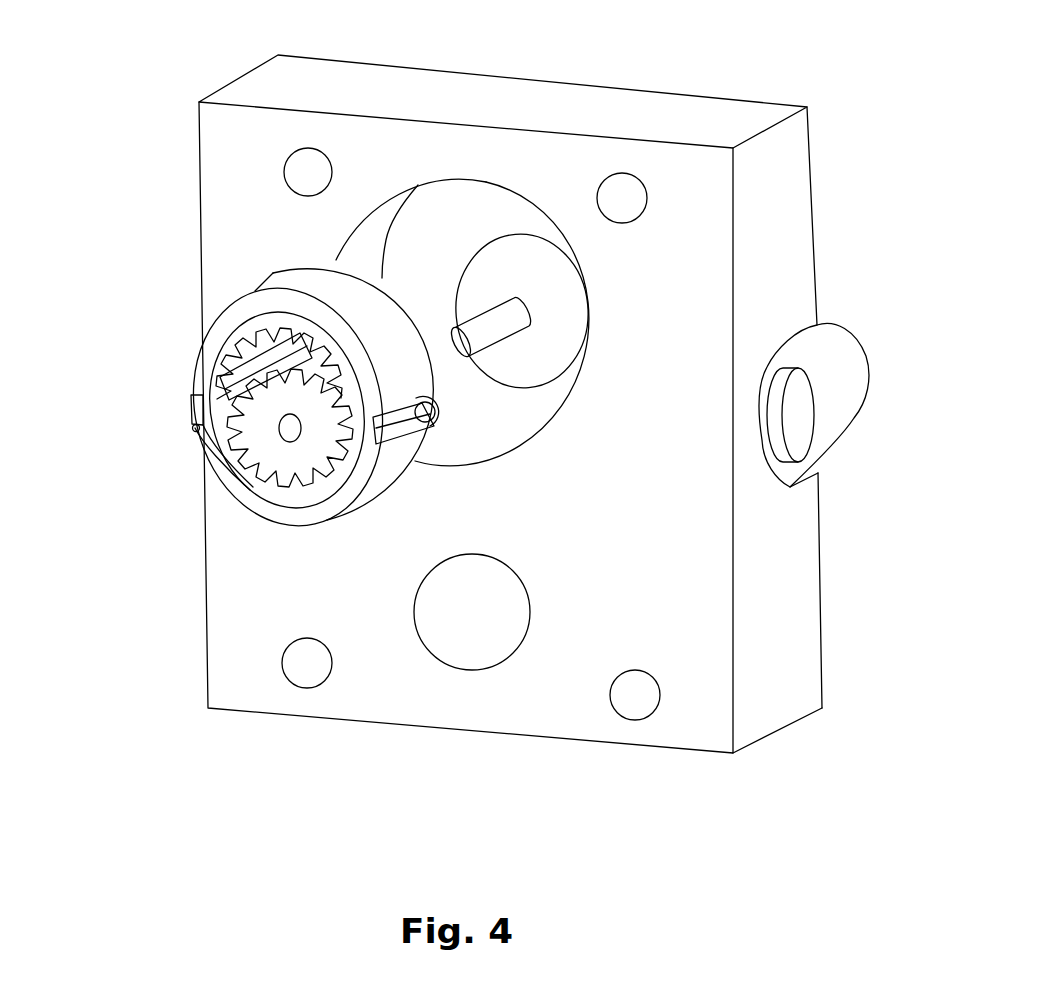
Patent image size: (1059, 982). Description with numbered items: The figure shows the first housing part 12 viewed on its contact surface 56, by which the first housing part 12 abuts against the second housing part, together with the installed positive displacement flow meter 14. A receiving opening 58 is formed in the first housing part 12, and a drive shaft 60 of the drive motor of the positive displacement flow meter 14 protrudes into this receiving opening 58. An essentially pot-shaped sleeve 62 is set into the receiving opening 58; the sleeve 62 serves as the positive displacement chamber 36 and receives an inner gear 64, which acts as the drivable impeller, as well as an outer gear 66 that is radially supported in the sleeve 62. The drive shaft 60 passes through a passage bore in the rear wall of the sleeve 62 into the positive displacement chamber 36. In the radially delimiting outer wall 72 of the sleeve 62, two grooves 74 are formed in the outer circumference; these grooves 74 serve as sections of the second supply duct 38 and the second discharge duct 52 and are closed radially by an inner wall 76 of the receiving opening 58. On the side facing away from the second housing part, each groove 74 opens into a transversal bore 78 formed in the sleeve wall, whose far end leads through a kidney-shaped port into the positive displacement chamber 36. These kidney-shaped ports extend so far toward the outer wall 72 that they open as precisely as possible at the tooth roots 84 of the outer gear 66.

The first housing part 12 is at (767, 178).
The positive displacement flow meter 14 is at (223, 386).
The positive displacement chamber 36 is at (215, 358).
The second supply duct 38 is at (388, 423).
The second discharge duct 52 is at (200, 413).
The contact surface 56 is at (472, 693).
The receiving opening 58 is at (373, 230).
The drive shaft 60 is at (501, 327).
The sleeve 62 is at (300, 286).
The inner gear 64 is at (262, 435).
The outer gear 66 is at (196, 430).
The radially delimiting outer wall 72 is at (337, 262).
The grooves 74 is at (382, 555).
The inner wall 76 is at (367, 248).
The transversal bore 78 is at (438, 408).
The tooth roots 84 is at (270, 432).